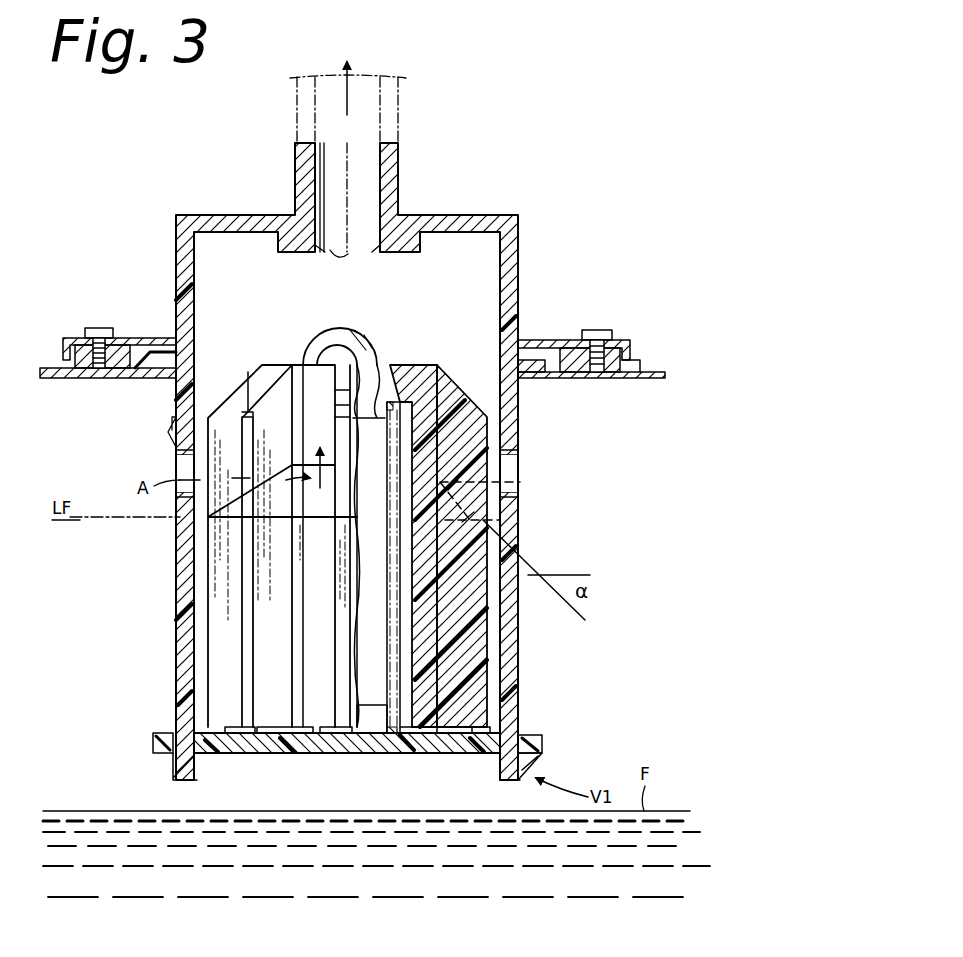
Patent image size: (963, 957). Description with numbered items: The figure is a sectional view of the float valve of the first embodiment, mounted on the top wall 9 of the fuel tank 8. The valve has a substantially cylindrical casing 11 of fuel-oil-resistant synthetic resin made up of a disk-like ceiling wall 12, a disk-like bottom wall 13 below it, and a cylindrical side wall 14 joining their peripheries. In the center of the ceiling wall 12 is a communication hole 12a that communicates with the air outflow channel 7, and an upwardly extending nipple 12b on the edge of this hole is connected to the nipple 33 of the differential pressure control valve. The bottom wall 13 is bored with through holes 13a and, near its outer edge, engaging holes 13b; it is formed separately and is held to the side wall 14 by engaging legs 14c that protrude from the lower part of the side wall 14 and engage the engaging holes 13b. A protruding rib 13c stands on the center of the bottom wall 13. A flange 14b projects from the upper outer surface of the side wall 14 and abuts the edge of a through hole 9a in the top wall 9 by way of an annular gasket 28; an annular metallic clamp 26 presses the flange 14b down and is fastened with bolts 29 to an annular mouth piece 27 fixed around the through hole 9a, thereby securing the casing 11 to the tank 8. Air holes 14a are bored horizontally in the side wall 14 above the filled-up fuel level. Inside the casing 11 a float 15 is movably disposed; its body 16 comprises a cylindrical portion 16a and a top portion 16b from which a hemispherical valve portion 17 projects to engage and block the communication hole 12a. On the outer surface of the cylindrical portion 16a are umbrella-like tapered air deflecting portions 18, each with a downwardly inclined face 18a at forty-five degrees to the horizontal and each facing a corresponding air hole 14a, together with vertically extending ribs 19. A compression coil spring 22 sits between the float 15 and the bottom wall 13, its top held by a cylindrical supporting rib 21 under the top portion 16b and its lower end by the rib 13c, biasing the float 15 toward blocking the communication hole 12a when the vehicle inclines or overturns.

The air outflow channel 7 is at (398, 103).
The nipple of the differential pressure control valve 33 is at (297, 103).
The fuel tank 8 is at (605, 349).
The top wall of the fuel tank 9 is at (632, 380).
The through hole 9a is at (530, 372).
The casing 11 is at (351, 461).
The ceiling wall 12 is at (408, 219).
The communication hole 12a is at (362, 252).
The nipple 12b is at (392, 170).
The bottom wall 13 is at (347, 749).
The through holes 13a is at (258, 753).
The engaging holes 13b is at (160, 733).
The protruding rib 13c is at (372, 738).
The side wall 14 is at (178, 596).
The air holes 14a is at (190, 462).
The flange 14b is at (138, 345).
The engaging legs 14c is at (173, 765).
The float 15 is at (288, 362).
The body of the float 16 is at (439, 509).
The cylindrical portion 16a is at (462, 524).
The top portion 16b is at (414, 365).
The valve portion 17 is at (328, 338).
The air deflecting portions 18 is at (500, 516).
The inclined face 18a is at (215, 518).
The ribs 19 is at (208, 648).
The supporting rib 21 is at (405, 416).
The compression coil spring 22 is at (392, 735).
The clamp 26 is at (540, 340).
The mouth piece 27 is at (640, 360).
The gasket 28 is at (575, 372).
The bolts 29 is at (600, 330).